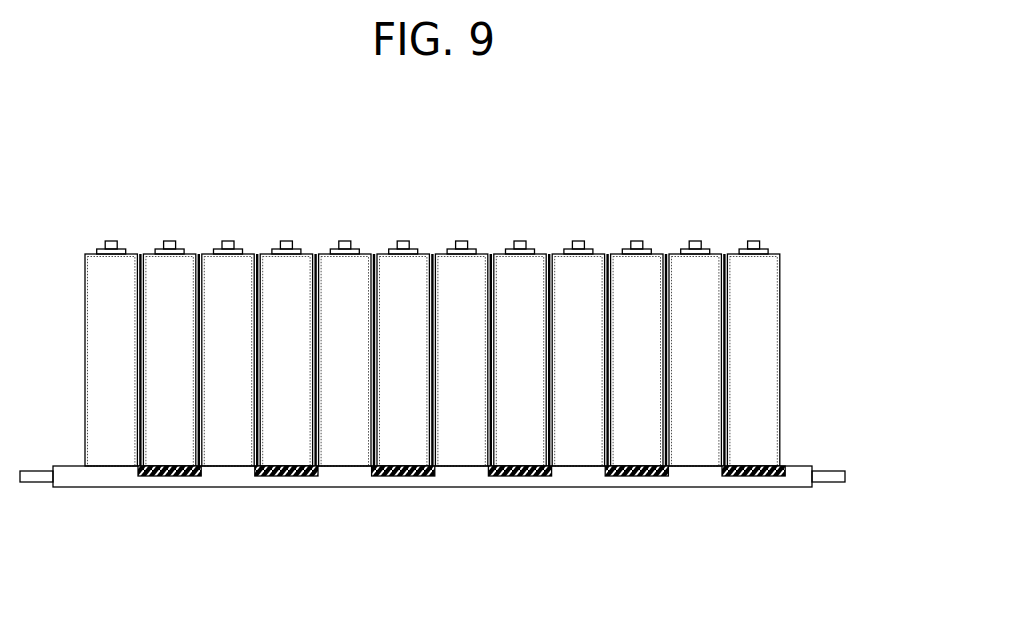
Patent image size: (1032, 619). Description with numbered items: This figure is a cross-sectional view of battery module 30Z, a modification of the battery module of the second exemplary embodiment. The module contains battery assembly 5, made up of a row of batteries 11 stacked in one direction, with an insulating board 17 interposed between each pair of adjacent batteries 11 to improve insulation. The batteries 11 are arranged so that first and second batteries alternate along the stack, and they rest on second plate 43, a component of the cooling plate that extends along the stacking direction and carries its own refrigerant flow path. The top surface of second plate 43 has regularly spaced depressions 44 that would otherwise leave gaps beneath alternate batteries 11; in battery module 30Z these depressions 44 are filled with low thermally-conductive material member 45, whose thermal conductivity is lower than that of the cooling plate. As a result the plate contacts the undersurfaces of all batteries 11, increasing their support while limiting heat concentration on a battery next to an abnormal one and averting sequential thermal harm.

The battery module 30Z is at (782, 116).
The battery assembly 5 is at (549, 247).
The battery 11 is at (695, 240).
The insulating board 17 is at (724, 369).
The second plate 43 is at (578, 472).
The depression 44 is at (752, 488).
The low thermally-conductive material member 45 is at (461, 471).